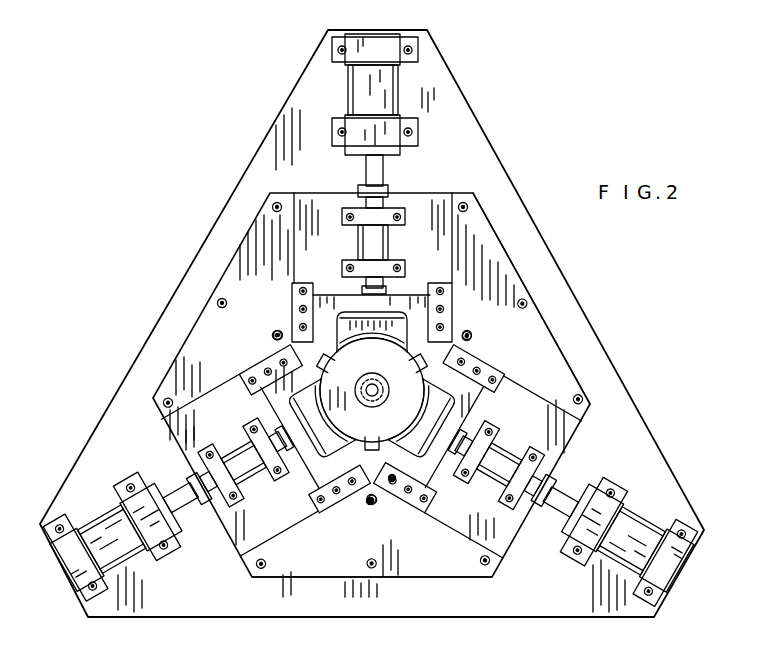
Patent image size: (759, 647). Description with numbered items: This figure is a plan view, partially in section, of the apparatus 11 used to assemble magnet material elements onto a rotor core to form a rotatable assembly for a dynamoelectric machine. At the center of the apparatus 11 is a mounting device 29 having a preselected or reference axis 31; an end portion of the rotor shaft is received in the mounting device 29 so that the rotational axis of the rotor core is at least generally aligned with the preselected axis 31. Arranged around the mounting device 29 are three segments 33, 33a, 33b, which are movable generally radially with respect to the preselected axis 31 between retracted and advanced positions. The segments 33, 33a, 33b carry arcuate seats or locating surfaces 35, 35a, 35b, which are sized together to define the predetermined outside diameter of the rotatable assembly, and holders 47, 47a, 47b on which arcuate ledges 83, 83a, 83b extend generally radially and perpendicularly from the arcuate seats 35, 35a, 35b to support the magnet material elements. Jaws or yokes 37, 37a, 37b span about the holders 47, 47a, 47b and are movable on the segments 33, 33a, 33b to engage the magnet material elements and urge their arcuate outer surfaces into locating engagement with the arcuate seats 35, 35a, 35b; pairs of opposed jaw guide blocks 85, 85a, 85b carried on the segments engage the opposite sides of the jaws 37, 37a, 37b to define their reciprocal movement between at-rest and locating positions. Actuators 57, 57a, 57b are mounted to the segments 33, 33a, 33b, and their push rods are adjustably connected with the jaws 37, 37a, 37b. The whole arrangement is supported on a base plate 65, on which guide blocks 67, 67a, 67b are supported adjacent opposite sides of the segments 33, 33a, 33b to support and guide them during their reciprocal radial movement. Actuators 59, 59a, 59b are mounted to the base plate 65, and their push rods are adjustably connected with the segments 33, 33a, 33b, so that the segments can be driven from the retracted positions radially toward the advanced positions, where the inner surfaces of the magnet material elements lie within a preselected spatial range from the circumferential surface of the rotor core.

The apparatus 11 is at (527, 132).
The mounting device 29 is at (387, 372).
The preselected axis 31 is at (373, 398).
The segment 33 is at (432, 198).
The segment 33a is at (570, 433).
The segment 33b is at (240, 522).
The arcuate seat 35 is at (337, 318).
The arcuate seat 35a is at (455, 390).
The arcuate seat 35b is at (330, 456).
The jaw 37 is at (334, 290).
The jaw 37a is at (477, 412).
The jaw 37b is at (305, 483).
The holder 47 is at (395, 310).
The holder 47a is at (428, 475).
The holder 47b is at (290, 400).
The actuator 57 is at (345, 207).
The actuator 57a is at (550, 462).
The actuator 57b is at (188, 462).
The actuator 59 is at (398, 88).
The actuator 59a is at (638, 520).
The actuator 59b is at (98, 518).
The base plate 65 is at (275, 115).
The guide block 67 is at (250, 217).
The guide block 67a is at (492, 225).
The guide block 67b is at (430, 578).
The arcuate ledge 83 is at (333, 325).
The arcuate ledge 83a is at (440, 385).
The arcuate ledge 83b is at (333, 450).
The jaw guide block 85 is at (305, 283).
The jaw guide block 85a is at (500, 388).
The jaw guide block 85b is at (242, 383).